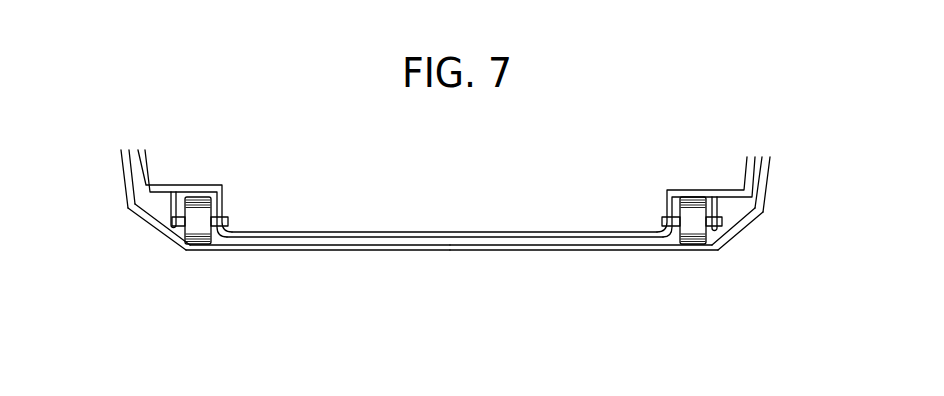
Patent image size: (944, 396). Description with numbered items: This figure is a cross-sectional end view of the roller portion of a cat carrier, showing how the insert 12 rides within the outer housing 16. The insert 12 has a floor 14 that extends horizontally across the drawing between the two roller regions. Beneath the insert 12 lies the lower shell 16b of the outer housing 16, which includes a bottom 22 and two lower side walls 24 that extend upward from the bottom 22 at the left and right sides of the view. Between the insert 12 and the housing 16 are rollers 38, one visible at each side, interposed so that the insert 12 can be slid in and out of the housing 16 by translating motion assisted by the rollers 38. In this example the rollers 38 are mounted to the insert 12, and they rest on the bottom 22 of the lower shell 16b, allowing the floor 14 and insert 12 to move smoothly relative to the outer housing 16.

The insert 12 is at (446, 193).
The floor 14 is at (313, 232).
The outer housing 16 is at (395, 250).
The lower shell 16b is at (567, 250).
The bottom 22 is at (260, 250).
The lower side walls 24 is at (120, 176).
The rollers 38 is at (691, 222).